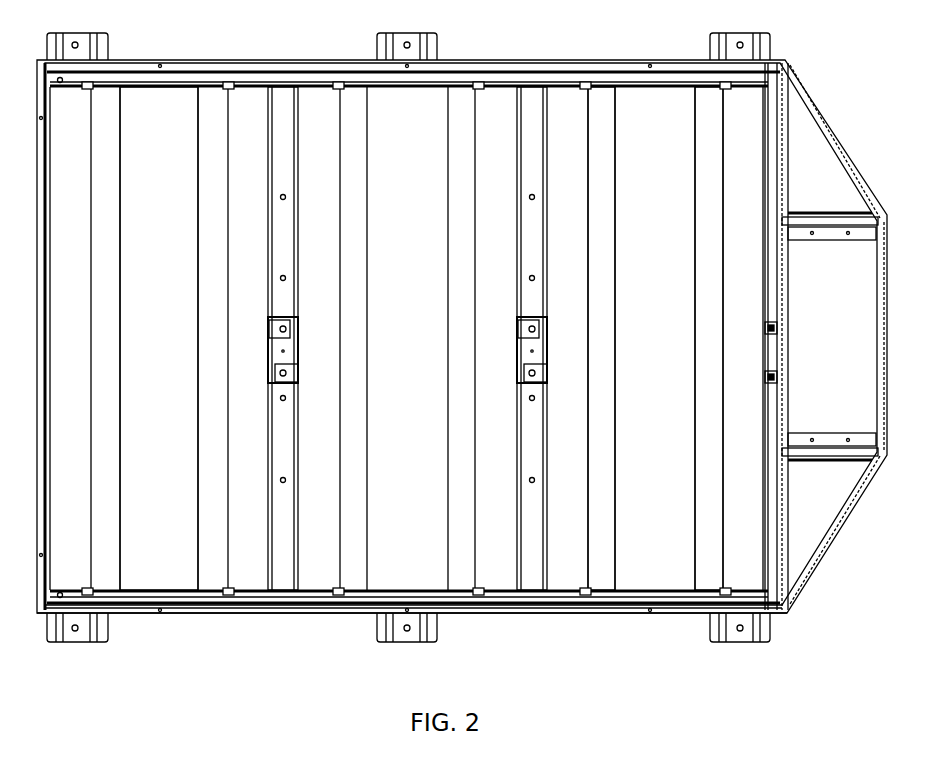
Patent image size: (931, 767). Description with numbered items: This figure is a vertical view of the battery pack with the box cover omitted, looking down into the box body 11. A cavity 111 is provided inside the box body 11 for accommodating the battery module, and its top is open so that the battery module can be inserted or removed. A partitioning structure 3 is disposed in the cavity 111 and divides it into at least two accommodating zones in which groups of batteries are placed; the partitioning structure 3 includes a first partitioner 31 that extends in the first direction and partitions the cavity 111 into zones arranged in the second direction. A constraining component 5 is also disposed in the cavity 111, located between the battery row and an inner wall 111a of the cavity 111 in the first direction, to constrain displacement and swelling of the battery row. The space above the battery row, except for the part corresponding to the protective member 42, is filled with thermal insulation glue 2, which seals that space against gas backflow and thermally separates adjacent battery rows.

The thermal insulation glue 2 is at (155, 97).
The first partitioner 31 is at (280, 97).
The partitioning structure 3 is at (533, 93).
The protective member 42 is at (605, 93).
The constraining component 5 is at (315, 595).
The inner wall 111a is at (497, 605).
The cavity 111 is at (603, 608).
The box body 11 is at (822, 553).